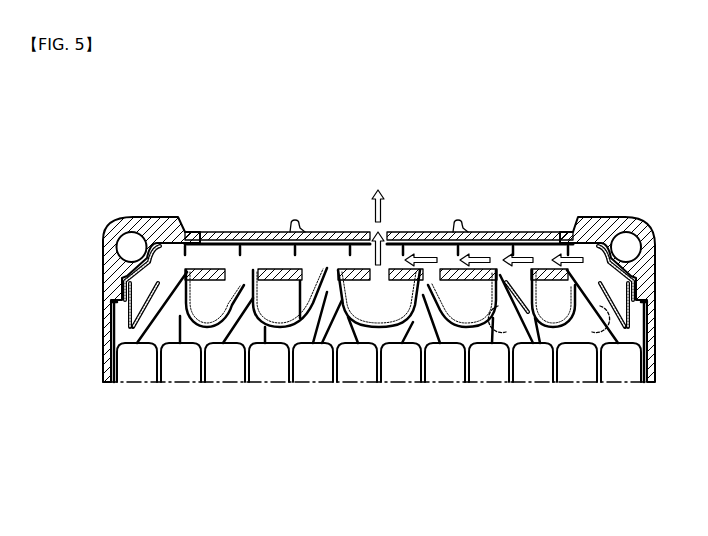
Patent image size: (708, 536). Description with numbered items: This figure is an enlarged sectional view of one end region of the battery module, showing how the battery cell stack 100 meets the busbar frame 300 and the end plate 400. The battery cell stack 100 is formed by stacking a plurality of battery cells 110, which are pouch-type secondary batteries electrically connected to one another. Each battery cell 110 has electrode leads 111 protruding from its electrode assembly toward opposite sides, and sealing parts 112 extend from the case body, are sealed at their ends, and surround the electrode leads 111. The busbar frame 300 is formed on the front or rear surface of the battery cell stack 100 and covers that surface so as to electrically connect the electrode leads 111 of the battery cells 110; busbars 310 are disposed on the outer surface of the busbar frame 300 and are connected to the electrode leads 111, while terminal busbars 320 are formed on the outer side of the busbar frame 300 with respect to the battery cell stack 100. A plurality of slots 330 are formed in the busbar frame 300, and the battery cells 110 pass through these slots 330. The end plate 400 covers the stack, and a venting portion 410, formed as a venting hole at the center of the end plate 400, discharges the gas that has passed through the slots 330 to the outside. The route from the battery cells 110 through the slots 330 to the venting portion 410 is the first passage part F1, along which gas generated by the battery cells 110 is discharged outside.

The battery cell stack 100 is at (202, 404).
The battery cell 110 is at (137, 378).
The electrode lead 111 is at (219, 247).
The sealing part 112 is at (117, 336).
The busbar frame 300 is at (130, 312).
The busbar 310 is at (448, 286).
The terminal busbar 320 is at (203, 268).
The slot 330 is at (520, 277).
The end plate 400 is at (121, 220).
The venting portion 410 is at (370, 233).
The first passage part F1 is at (472, 232).